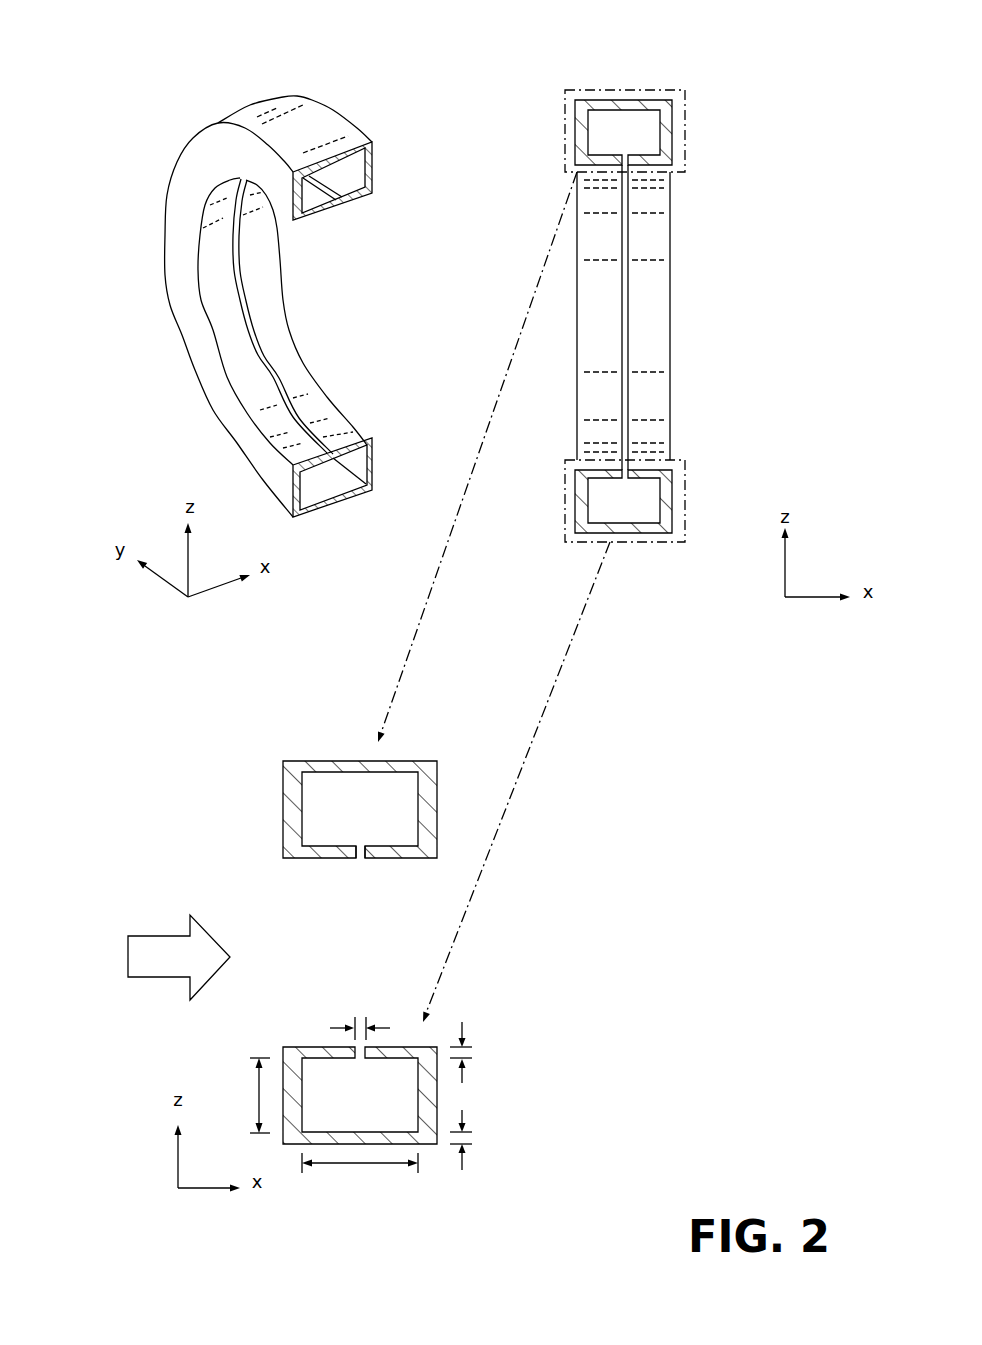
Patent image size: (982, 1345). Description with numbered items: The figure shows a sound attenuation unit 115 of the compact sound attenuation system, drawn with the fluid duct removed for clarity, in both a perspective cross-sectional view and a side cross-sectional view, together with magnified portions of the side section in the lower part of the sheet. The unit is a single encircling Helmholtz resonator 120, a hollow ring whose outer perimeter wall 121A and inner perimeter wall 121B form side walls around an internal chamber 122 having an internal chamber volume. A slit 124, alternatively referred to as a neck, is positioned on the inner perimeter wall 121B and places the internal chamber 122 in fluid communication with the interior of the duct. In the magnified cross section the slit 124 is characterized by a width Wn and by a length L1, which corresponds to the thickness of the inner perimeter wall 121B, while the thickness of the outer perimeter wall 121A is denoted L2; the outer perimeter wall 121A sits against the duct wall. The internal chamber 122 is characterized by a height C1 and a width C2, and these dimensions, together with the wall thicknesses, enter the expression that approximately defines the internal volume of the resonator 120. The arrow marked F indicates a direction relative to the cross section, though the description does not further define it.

The sound attenuation unit 115 is at (198, 108).
The encircling Helmholtz resonator 120 is at (166, 192).
The outer perimeter wall 121A is at (317, 130).
The inner perimeter wall 121B is at (230, 325).
The internal chamber 122 is at (344, 821).
The slit 124 is at (360, 872).
The slit width Wn is at (378, 1026).
The inner perimeter wall thickness L1 is at (463, 1030).
The outer perimeter wall thickness L2 is at (463, 1160).
The internal chamber height C1 is at (255, 1096).
The internal chamber width C2 is at (363, 1167).
The applied force direction F is at (179, 957).